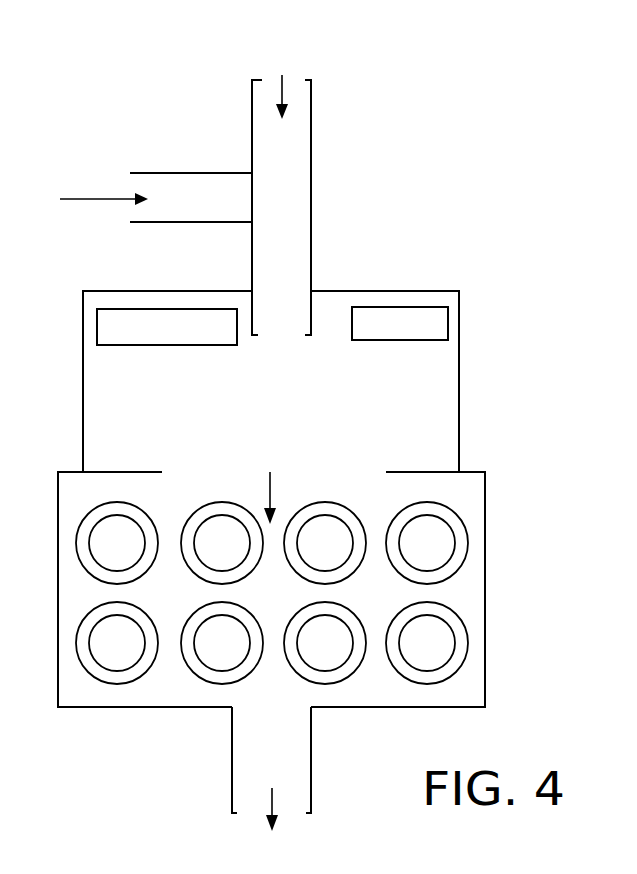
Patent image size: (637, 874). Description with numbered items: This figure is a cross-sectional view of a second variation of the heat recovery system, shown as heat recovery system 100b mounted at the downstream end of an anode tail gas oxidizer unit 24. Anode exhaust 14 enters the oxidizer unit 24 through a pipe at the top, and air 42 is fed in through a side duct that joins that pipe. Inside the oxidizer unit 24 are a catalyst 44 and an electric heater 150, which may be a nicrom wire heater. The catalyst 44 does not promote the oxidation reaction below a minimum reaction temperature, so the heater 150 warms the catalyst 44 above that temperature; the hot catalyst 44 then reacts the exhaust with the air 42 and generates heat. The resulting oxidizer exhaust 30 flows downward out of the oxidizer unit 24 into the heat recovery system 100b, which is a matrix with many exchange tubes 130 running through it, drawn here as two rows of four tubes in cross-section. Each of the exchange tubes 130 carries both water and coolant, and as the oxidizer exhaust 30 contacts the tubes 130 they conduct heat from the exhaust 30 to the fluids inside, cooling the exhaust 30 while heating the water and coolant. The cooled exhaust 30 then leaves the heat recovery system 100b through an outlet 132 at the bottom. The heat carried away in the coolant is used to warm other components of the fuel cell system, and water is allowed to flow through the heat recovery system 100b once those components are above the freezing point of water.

The anode exhaust 14 is at (291, 178).
The air 42 is at (97, 196).
The catalyst 44 is at (97, 313).
The electric heater 150 is at (423, 307).
The anode tail gas oxidizer unit 24 is at (264, 451).
The heat recovery system 100b is at (490, 472).
The oxidizer exhaust 30 is at (269, 490).
The exchange tubes 130 is at (466, 549).
The outlet 132 is at (313, 774).